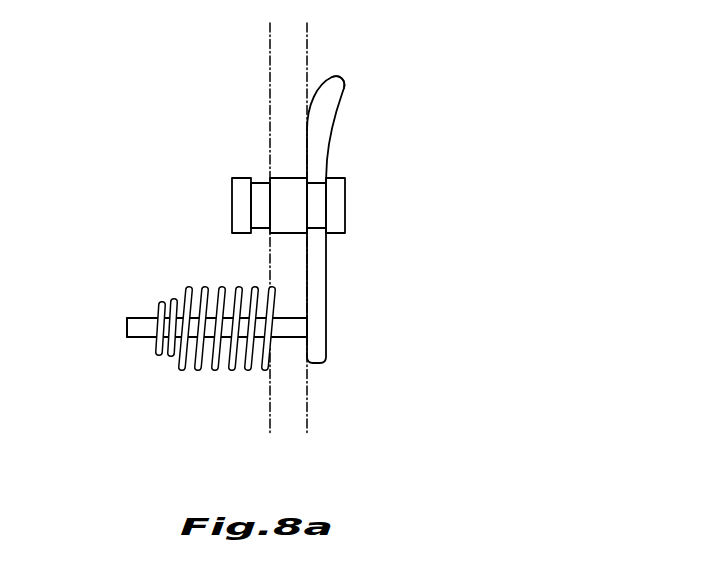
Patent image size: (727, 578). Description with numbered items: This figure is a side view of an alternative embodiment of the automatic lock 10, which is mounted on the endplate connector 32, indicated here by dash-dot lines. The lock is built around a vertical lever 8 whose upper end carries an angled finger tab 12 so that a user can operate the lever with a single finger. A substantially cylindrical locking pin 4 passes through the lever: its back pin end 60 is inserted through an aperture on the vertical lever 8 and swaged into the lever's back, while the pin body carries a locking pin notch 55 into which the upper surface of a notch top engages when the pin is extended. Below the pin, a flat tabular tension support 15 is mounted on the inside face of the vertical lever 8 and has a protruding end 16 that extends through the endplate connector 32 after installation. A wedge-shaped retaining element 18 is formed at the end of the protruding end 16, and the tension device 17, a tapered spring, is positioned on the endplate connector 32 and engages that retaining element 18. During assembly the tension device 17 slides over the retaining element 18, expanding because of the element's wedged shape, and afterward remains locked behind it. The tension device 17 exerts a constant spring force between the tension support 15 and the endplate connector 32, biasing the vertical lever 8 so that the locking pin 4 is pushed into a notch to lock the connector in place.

The locking pin 4 is at (238, 178).
The vertical lever 8 is at (327, 270).
The automatic lock 10 is at (253, 147).
The finger tab 12 is at (334, 90).
The tension support 15 is at (287, 332).
The protruding end 16 is at (138, 337).
The tension device 17 is at (217, 365).
The retaining element 18 is at (128, 318).
The endplate connector 32 is at (308, 51).
The locking pin notch 55 is at (260, 220).
The back pin end 60 is at (337, 203).